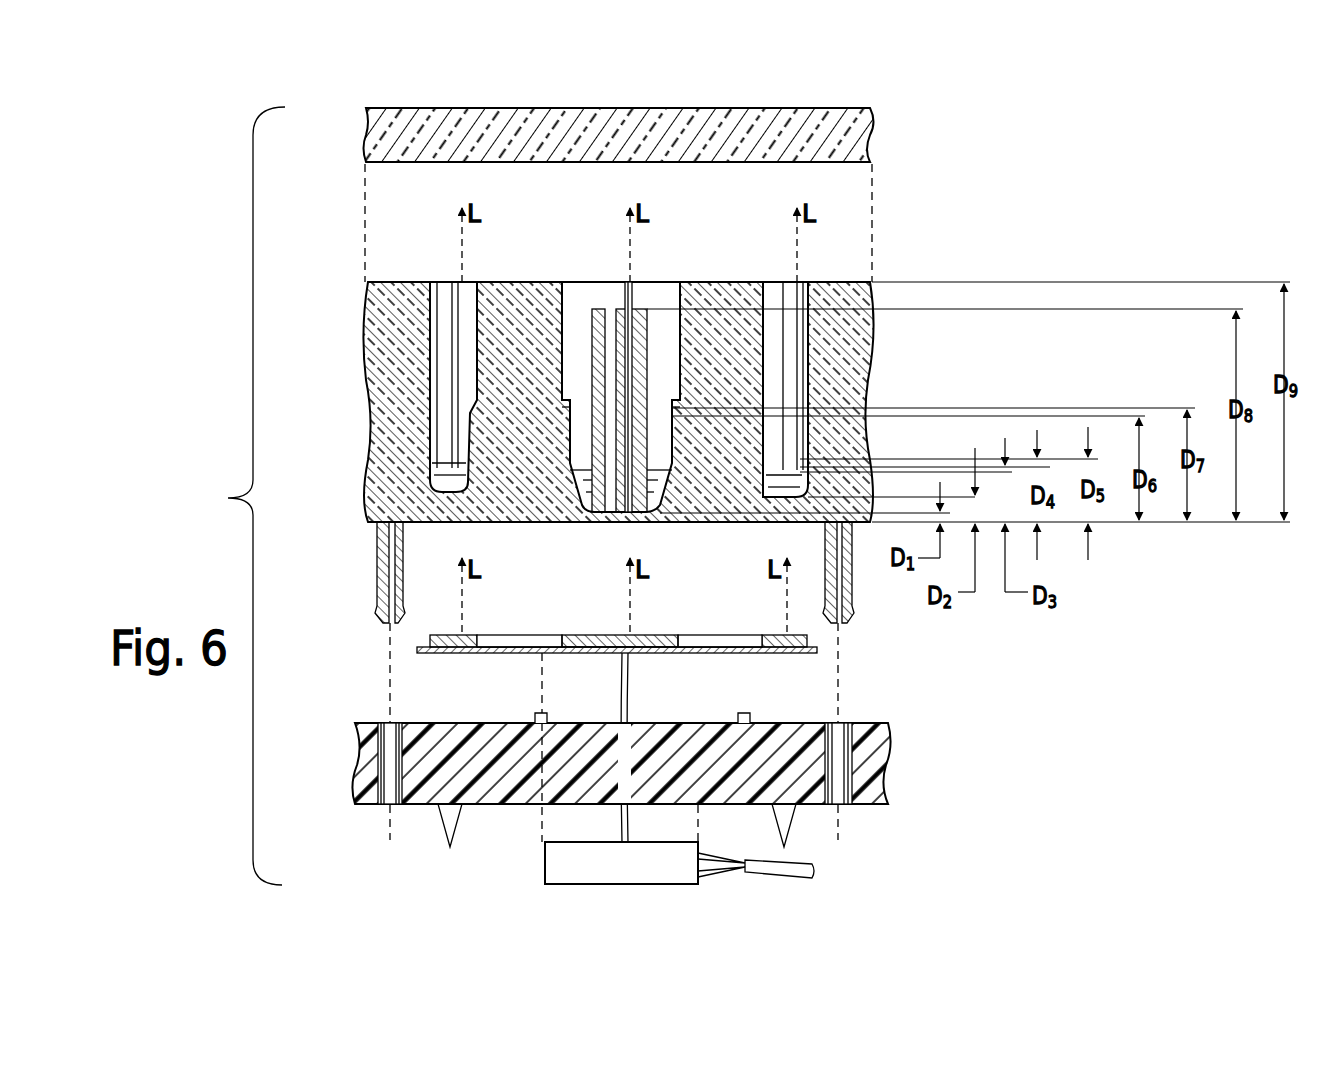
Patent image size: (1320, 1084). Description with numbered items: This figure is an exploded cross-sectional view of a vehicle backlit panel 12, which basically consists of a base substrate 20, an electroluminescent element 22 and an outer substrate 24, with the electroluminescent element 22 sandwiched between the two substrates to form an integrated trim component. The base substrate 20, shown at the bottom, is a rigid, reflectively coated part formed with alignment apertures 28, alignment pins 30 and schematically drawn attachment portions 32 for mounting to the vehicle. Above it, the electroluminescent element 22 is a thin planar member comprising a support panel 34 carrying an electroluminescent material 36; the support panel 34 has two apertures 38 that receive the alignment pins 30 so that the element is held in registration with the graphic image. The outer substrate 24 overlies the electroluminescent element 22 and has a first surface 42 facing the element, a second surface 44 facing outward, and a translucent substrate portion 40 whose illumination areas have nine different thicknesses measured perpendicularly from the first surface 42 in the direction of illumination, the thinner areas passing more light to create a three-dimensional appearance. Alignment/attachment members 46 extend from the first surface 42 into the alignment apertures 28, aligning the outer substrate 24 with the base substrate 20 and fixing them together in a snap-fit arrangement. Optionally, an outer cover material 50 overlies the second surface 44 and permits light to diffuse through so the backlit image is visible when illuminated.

The vehicle backlit panel 12 is at (241, 496).
The base substrate 20 is at (336, 804).
The electroluminescent element 22 is at (408, 651).
The outer substrate 24 is at (346, 431).
The alignment apertures 28 is at (378, 758).
The alignment pins 30 is at (546, 714).
The attachment portions 32 is at (440, 830).
The support panel 34 is at (452, 654).
The electroluminescent material 36 is at (660, 633).
The apertures 38 is at (540, 654).
The translucent substrate portion 40 is at (565, 266).
The first surface 42 is at (556, 523).
The second surface 44 is at (410, 280).
The alignment/attachment members 46 is at (377, 580).
The outer cover material 50 is at (872, 132).